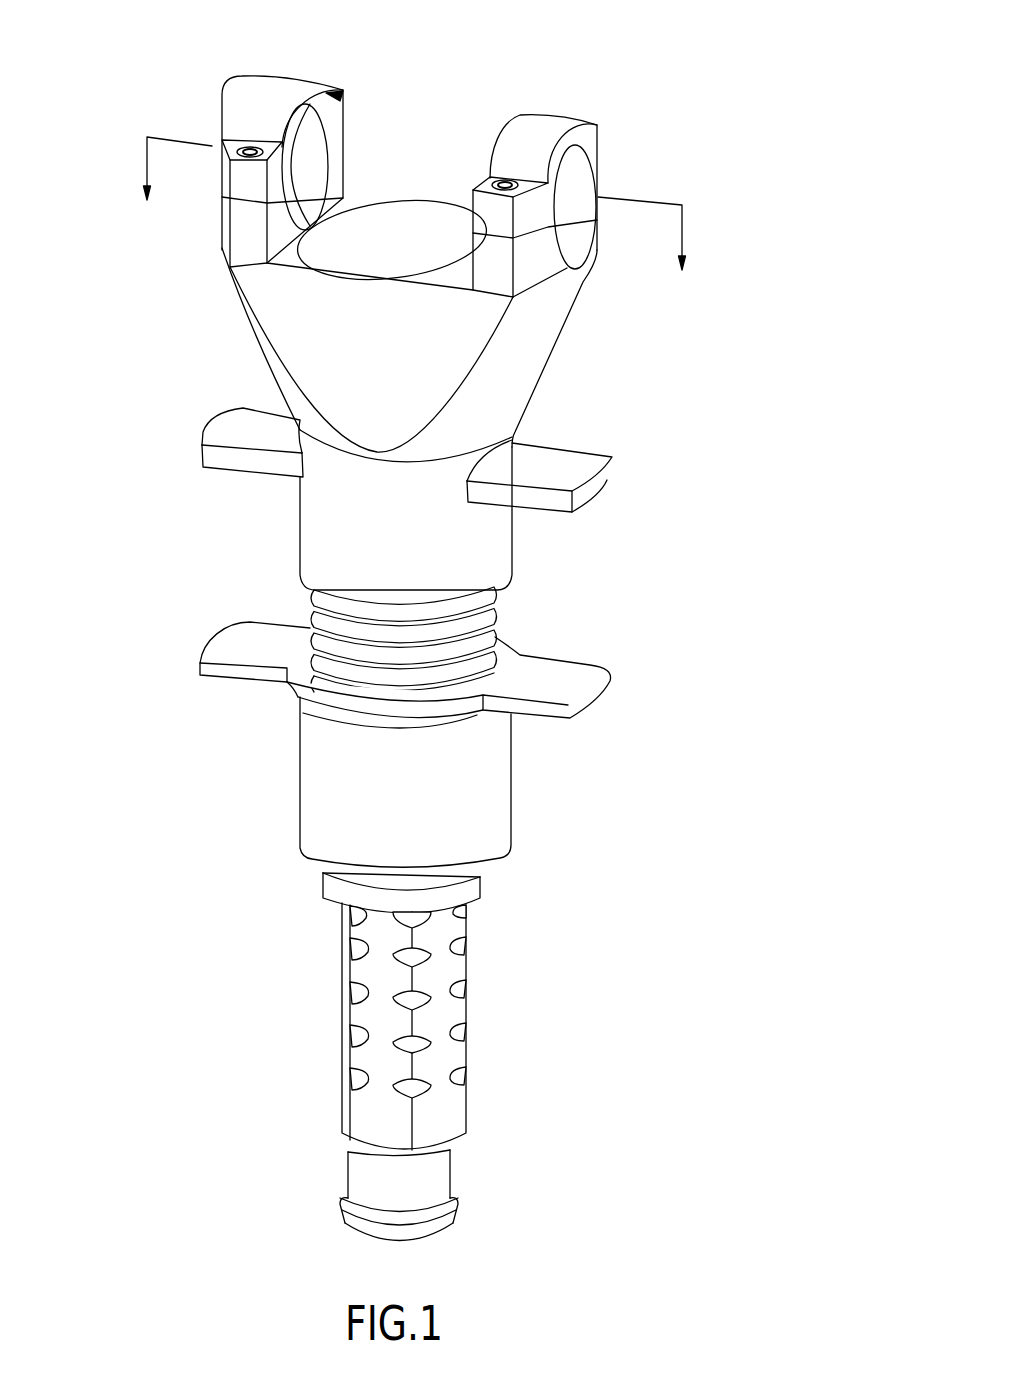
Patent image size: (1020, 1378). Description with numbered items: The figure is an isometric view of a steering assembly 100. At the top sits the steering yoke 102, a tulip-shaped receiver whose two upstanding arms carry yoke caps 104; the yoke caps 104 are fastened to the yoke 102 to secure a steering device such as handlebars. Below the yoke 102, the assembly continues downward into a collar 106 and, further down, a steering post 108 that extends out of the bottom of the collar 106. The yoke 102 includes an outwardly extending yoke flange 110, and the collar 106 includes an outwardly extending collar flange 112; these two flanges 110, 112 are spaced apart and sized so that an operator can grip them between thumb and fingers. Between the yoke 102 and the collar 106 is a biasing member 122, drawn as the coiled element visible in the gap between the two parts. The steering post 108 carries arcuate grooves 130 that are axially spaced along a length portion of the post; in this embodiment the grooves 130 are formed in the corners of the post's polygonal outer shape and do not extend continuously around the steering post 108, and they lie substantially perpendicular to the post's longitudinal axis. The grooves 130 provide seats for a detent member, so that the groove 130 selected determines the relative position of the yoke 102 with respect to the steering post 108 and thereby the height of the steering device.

The steering assembly 100 is at (637, 58).
The steering yoke 102 is at (300, 343).
The yoke caps 104 is at (538, 130).
The collar 106 is at (528, 787).
The steering post 108 is at (488, 1093).
The yoke flange 110 is at (562, 464).
The collar flange 112 is at (551, 667).
The biasing member 122 is at (308, 605).
The arcuate grooves 130 is at (463, 1032).